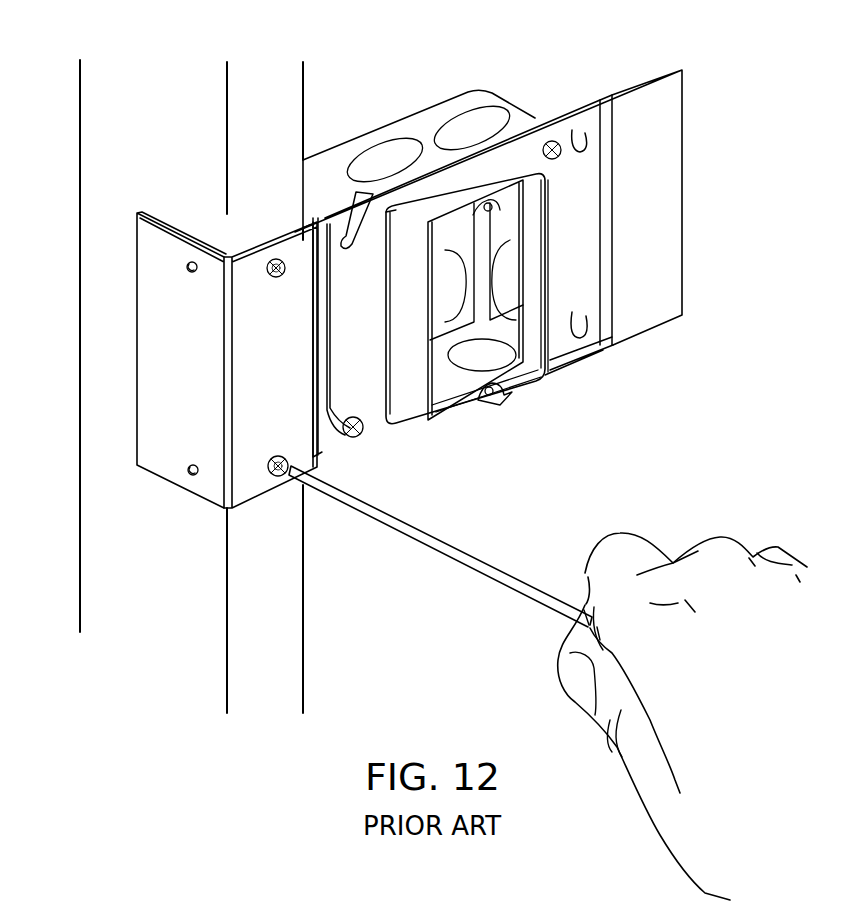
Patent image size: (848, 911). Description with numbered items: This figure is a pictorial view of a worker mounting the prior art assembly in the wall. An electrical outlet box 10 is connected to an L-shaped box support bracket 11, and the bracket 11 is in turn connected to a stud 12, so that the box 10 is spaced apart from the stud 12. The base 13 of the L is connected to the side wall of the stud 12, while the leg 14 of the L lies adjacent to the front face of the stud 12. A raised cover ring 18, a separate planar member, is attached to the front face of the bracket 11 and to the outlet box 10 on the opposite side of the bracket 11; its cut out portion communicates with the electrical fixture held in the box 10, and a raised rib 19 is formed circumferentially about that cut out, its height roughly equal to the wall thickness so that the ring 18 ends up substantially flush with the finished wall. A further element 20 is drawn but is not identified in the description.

The electrical outlet box 10 is at (403, 128).
The box support bracket 11 is at (589, 100).
The stud 12 is at (277, 595).
The base 13 is at (167, 298).
The leg 14 is at (262, 378).
The raised cover ring 18 is at (505, 396).
The raised rib 19 is at (438, 376).
The device ring 20 is at (548, 283).